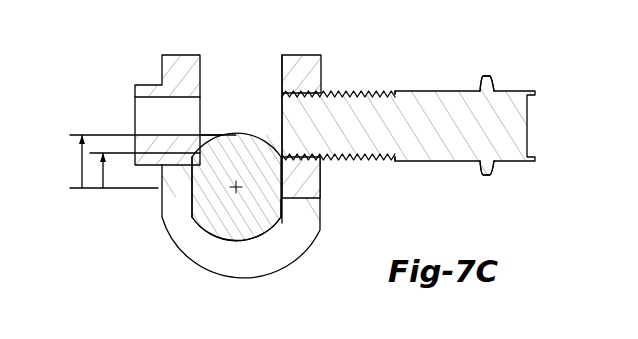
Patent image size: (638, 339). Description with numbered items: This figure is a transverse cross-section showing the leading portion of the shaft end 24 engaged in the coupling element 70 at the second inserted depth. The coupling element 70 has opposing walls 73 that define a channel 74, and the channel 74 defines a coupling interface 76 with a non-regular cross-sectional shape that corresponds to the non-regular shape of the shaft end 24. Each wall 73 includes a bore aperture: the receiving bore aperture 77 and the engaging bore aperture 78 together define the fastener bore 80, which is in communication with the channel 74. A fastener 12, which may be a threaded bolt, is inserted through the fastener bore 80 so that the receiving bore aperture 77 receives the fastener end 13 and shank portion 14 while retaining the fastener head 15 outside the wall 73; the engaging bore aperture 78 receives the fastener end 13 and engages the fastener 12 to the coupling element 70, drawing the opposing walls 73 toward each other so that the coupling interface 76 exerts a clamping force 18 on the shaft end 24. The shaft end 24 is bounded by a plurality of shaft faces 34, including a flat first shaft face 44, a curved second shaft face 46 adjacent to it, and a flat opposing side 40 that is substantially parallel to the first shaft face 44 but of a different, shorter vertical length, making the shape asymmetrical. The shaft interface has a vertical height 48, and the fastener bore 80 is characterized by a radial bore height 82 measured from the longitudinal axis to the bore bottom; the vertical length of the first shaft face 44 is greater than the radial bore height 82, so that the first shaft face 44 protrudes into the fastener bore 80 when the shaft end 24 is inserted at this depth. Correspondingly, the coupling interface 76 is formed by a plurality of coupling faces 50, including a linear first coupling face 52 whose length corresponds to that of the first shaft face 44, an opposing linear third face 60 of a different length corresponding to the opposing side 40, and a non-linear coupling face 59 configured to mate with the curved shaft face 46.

The fastener 12 is at (545, 127).
The fastener end 13 is at (281, 108).
The shank portion 14 is at (395, 160).
The fastener head 15 is at (515, 163).
The clamping force 18 is at (148, 70).
The shaft end 24 is at (203, 250).
The shaft faces 34 is at (219, 241).
The opposing side 40 is at (192, 203).
The first shaft face 44 is at (286, 199).
The second shaft face 46 is at (238, 133).
The vertical height 48 is at (82, 168).
The coupling faces 50 is at (240, 262).
The first coupling face 52 is at (277, 212).
The coupling face 59 is at (246, 233).
The third face 60 is at (190, 212).
The coupling element 70 is at (325, 265).
The opposing walls 73 is at (286, 253).
The channel 74 is at (218, 63).
The coupling interface 76 is at (282, 157).
The receiving bore aperture 77 is at (323, 93).
The engaging bore aperture 78 is at (148, 109).
The fastener bore 80 is at (157, 122).
The radial bore height 82 is at (103, 180).